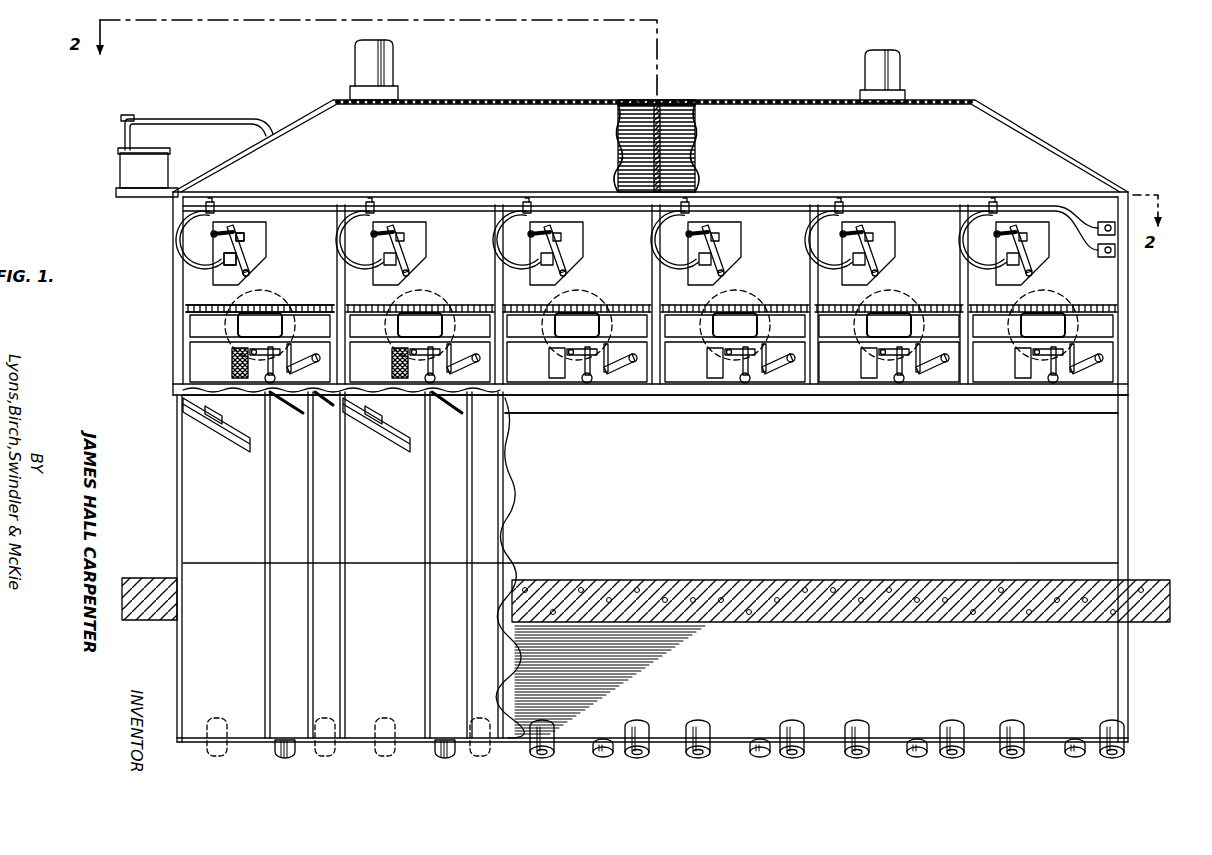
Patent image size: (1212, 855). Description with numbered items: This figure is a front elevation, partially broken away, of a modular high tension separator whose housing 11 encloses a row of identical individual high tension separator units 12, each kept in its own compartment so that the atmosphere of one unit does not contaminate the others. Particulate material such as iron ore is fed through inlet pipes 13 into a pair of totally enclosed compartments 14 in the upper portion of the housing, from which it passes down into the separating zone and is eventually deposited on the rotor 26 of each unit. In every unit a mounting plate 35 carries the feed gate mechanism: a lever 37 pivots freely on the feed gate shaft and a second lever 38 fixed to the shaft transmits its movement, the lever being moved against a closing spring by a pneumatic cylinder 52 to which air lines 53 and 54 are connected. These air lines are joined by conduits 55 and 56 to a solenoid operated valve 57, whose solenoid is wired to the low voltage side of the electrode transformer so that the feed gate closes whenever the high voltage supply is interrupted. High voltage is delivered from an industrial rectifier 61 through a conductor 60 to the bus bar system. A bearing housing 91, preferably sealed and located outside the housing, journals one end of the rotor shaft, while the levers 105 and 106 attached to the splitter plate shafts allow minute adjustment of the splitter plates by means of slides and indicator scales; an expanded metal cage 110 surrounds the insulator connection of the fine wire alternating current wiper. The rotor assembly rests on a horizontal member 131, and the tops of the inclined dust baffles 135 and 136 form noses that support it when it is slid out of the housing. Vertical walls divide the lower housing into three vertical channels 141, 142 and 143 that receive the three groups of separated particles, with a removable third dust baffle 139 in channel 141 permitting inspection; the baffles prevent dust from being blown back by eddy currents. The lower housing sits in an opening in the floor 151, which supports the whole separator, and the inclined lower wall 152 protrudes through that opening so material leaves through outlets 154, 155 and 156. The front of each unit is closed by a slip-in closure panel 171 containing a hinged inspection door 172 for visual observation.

The housing 11 is at (625, 419).
The high tension separator units 12 is at (628, 301).
The inlet pipes 13 is at (393, 62).
The compartments 14 is at (455, 118).
The rotor 26 is at (273, 320).
The mounting plate 35 is at (255, 253).
The lever 37 is at (234, 249).
The second lever 38 is at (224, 267).
The pneumatic cylinder 52 is at (233, 268).
The air line 53 is at (188, 264).
The air line 54 is at (188, 233).
The conduit 55 is at (872, 205).
The conduit 56 is at (922, 211).
The solenoid operated valve 57 is at (1095, 252).
The conductor 60 is at (188, 119).
The industrial rectifier 61 is at (118, 161).
The bearing housing 91 is at (559, 325).
The lever 105 is at (780, 394).
The lever 106 is at (728, 396).
The expanded metal cage 110 is at (223, 363).
The horizontal member 131 is at (565, 397).
The inclined dust baffle 135 is at (297, 411).
The inclined dust baffle 136 is at (332, 408).
The third inclined dust baffle 139 is at (230, 425).
The vertical channel 141 is at (302, 565).
The vertical channel 142 is at (371, 565).
The vertical channel 143 is at (325, 525).
The floor 151 is at (848, 588).
The inclined lower wall 152 is at (709, 680).
The outlet 154 is at (224, 762).
The outlet 155 is at (288, 762).
The outlet 156 is at (326, 762).
The slip-in closure panel 171 is at (286, 294).
The hinged inspection door 172 is at (280, 298).